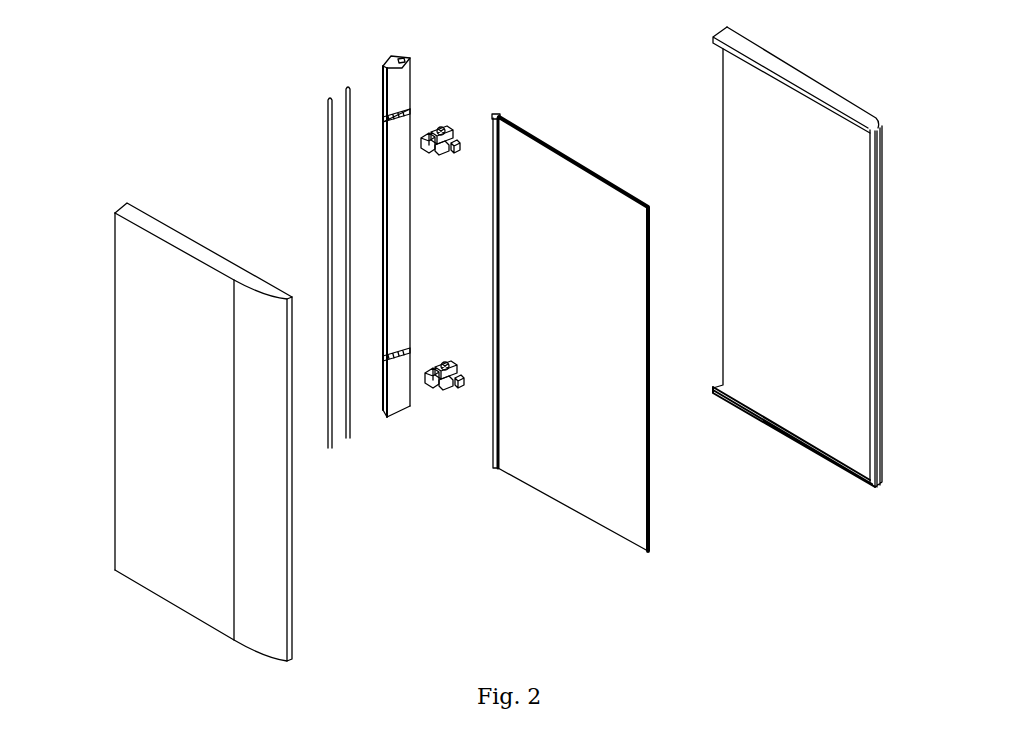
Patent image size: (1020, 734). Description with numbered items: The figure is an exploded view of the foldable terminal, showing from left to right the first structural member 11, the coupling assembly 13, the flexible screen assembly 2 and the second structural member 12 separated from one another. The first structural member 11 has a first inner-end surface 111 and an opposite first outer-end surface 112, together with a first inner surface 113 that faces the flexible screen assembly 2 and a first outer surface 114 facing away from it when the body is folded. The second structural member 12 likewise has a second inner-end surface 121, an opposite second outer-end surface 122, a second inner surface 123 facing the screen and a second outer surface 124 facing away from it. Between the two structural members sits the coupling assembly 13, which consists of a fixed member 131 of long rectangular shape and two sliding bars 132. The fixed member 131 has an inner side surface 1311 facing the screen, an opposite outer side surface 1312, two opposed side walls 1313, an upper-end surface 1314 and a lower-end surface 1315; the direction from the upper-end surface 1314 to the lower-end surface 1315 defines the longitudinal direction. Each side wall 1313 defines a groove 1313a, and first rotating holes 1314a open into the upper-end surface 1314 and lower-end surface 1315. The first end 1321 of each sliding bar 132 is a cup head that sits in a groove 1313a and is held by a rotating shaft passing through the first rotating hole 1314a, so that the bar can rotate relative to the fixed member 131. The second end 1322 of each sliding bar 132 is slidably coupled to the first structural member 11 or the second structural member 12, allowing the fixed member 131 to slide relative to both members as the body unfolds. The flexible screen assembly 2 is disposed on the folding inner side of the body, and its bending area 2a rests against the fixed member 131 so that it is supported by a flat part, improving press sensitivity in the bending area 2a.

The first structural member 11 is at (204, 431).
The first inner-end surface 111 is at (115, 273).
The first outer-end surface 112 is at (292, 482).
The first inner surface 113 is at (187, 239).
The first outer surface 114 is at (133, 381).
The coupling assembly 13 is at (458, 43).
The fixed member 131 is at (413, 226).
The inner side surface 1311 is at (411, 233).
The outer side surface 1312 is at (383, 83).
The side wall 1313 is at (411, 93).
The groove 1313a is at (405, 111).
The upper-end surface 1314 is at (393, 47).
The first rotating hole 1314a is at (390, 62).
The lower-end surface 1315 is at (402, 407).
The sliding bar 132 is at (448, 256).
The first end 1321 is at (450, 118).
The second end 1322 is at (465, 133).
The flexible screen assembly 2 is at (586, 322).
The bending area 2a is at (498, 117).
The second structural member 12 is at (811, 257).
The second inner-end surface 121 is at (723, 137).
The second outer-end surface 122 is at (877, 243).
The second inner surface 123 is at (768, 232).
The second outer surface 124 is at (877, 127).